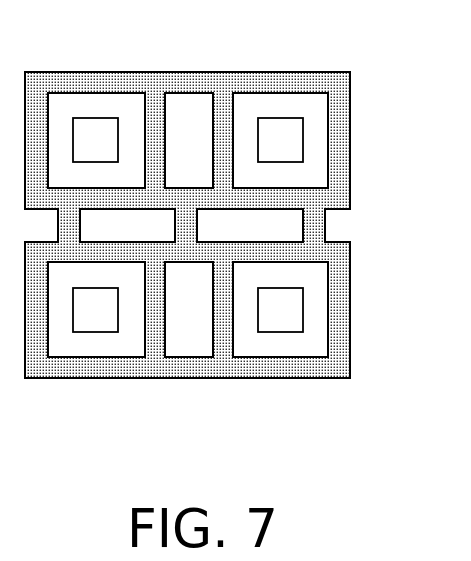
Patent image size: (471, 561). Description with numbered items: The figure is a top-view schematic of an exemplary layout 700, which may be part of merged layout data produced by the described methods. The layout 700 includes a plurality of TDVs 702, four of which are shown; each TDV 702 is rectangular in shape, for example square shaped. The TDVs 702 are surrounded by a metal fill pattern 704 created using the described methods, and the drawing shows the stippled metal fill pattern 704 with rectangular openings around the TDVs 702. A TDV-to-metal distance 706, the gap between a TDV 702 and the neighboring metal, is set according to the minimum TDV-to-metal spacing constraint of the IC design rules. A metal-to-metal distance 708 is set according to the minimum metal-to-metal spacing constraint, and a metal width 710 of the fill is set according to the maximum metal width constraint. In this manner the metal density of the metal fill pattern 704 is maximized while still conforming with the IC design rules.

The layout 700 is at (228, 236).
The TDVs 702 is at (302, 129).
The metal fill pattern 704 is at (350, 165).
The TDV-to-metal distance 706 is at (118, 118).
The metal-to-metal distance 708 is at (167, 120).
The metal width 710 is at (333, 277).